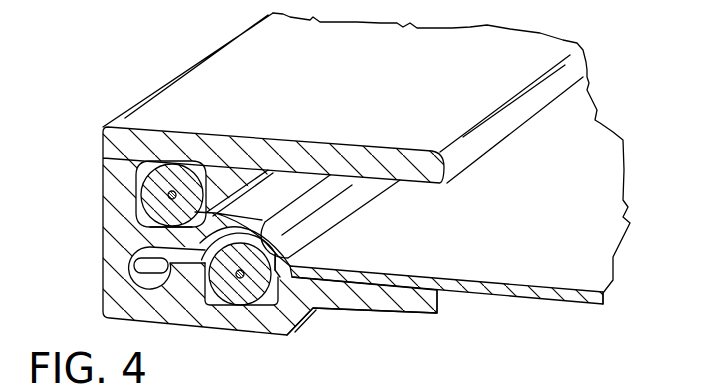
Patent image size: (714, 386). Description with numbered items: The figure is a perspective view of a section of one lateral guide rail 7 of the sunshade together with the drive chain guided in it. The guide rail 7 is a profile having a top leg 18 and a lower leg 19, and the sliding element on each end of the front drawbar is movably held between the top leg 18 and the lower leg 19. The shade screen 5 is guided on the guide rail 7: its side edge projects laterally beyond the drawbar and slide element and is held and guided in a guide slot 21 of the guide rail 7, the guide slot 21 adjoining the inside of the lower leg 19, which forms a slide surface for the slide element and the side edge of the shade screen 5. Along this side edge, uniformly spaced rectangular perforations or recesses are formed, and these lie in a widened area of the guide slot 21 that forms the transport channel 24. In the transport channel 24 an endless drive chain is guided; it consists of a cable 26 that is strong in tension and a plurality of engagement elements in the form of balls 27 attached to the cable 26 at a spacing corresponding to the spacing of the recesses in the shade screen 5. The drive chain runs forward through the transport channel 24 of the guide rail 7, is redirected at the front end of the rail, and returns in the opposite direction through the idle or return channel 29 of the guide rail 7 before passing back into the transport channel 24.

The guide rail 7 is at (140, 102).
The top leg 18 is at (385, 163).
The return channel 29 is at (138, 165).
The cable 26 is at (168, 195).
The balls 27 is at (172, 228).
The guide slot 21 is at (143, 245).
The transport channel 24 is at (273, 303).
The lower leg 19 is at (370, 300).
The shade screen 5 is at (515, 255).